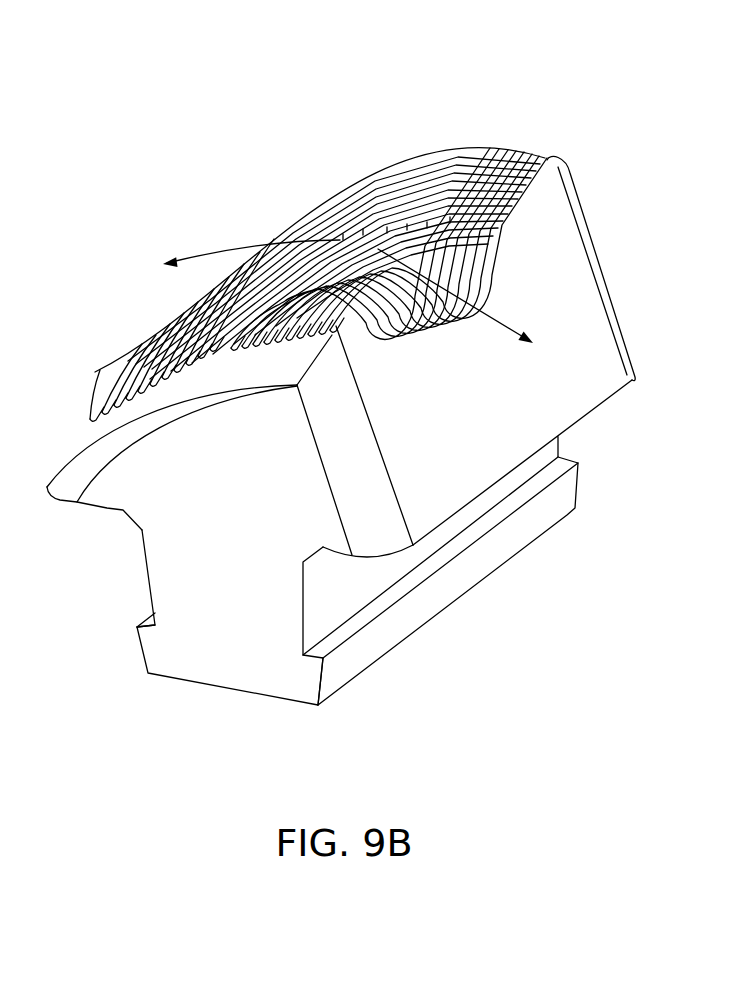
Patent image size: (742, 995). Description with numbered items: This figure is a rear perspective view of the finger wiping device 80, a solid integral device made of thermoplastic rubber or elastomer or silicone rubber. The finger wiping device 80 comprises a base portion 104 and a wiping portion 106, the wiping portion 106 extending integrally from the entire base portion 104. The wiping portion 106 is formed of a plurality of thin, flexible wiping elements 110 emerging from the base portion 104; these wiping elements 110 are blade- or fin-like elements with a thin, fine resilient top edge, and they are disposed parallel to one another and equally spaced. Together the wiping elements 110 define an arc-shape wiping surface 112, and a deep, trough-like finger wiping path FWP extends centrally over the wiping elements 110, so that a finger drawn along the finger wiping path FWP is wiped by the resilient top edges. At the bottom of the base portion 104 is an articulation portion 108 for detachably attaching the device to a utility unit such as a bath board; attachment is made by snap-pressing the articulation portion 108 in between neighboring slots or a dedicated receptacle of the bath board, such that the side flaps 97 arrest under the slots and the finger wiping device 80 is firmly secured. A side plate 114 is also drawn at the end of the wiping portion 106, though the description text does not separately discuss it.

The finger wiping device 80 is at (369, 422).
The side flaps 97 is at (142, 650).
The base portion 104 is at (130, 487).
The wiping portion 106 is at (540, 152).
The articulation portion 108 is at (223, 655).
The wiping elements 110 is at (374, 263).
The arc-shape wiping surface 112 is at (355, 294).
The side plate 114 is at (468, 263).
The finger wiping path FWP is at (507, 318).